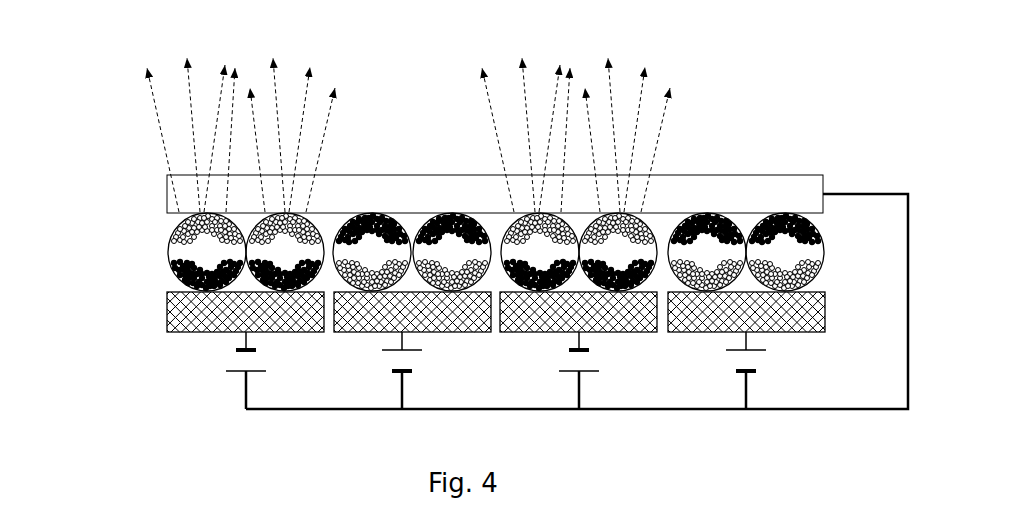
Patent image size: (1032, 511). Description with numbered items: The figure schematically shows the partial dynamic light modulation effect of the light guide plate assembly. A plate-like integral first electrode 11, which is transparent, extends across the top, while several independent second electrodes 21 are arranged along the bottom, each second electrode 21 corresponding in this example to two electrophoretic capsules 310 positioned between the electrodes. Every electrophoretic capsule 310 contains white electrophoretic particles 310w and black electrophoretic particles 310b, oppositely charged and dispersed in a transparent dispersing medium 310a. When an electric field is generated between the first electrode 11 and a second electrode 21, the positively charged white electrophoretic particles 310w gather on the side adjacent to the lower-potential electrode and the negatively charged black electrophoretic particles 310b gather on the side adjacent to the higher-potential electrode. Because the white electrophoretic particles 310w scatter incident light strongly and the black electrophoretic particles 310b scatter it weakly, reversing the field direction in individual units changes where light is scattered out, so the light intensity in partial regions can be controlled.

The first electrode 11 is at (188, 194).
The second electrode 21 is at (187, 312).
The electrophoretic capsule 310 is at (467, 253).
The transparent dispersing medium 310a is at (188, 250).
The white electrophoretic particles 310w is at (187, 225).
The black electrophoretic particles 310b is at (188, 273).